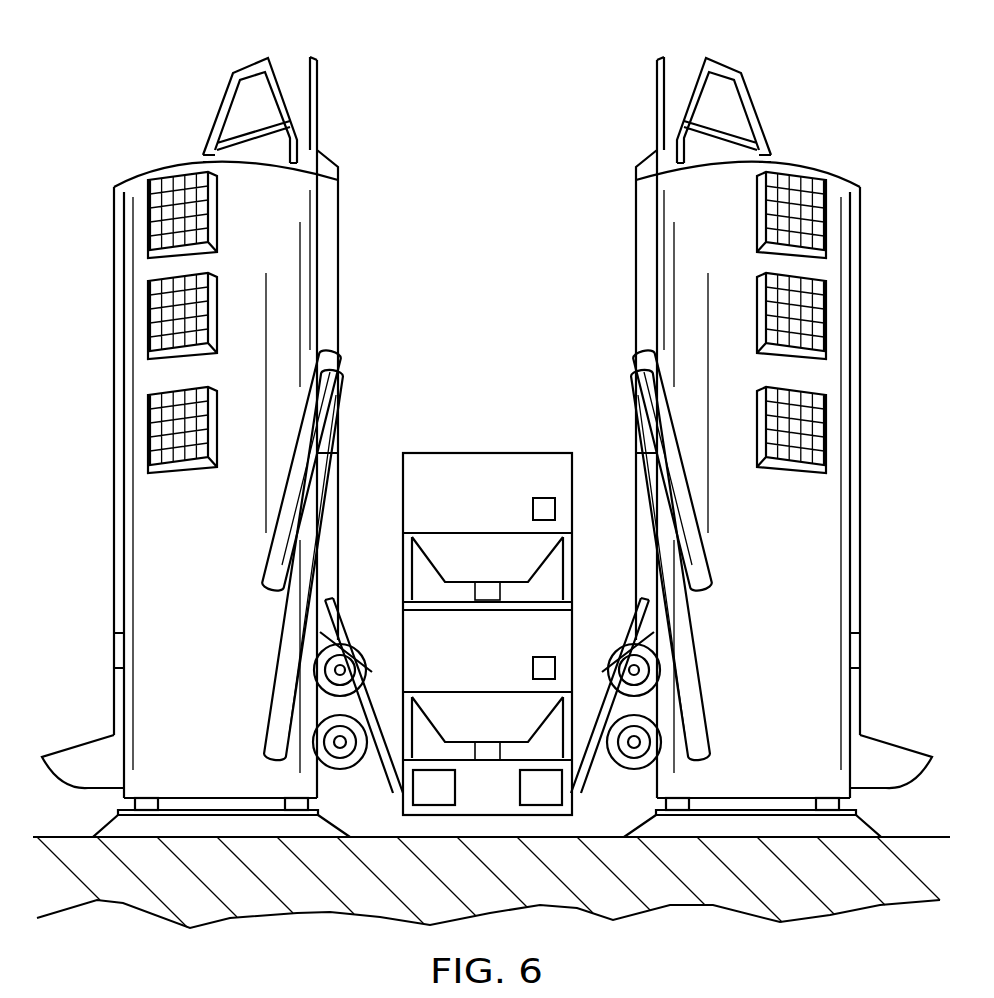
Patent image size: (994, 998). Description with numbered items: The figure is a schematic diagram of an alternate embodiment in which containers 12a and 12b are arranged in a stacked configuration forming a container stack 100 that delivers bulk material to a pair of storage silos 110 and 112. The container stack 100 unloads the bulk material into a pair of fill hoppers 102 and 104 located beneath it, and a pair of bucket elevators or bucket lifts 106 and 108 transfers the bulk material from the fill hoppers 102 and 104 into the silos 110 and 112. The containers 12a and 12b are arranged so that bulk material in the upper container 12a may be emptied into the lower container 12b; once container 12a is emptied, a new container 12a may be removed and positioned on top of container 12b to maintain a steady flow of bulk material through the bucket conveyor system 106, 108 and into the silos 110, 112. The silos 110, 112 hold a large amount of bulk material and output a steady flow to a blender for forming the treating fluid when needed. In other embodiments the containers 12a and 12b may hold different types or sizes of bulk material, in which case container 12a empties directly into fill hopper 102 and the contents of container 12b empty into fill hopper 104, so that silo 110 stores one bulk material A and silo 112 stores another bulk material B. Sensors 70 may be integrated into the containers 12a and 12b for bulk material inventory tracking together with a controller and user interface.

The silo 110 is at (157, 162).
The silo 112 is at (817, 160).
The container stack 100 is at (487, 625).
The container 12a is at (452, 462).
The container 12b is at (425, 645).
The sensor 70 is at (531, 508).
The fill hopper 102 is at (433, 797).
The fill hopper 104 is at (542, 797).
The bucket elevator 106 is at (390, 755).
The bucket elevator 108 is at (583, 752).